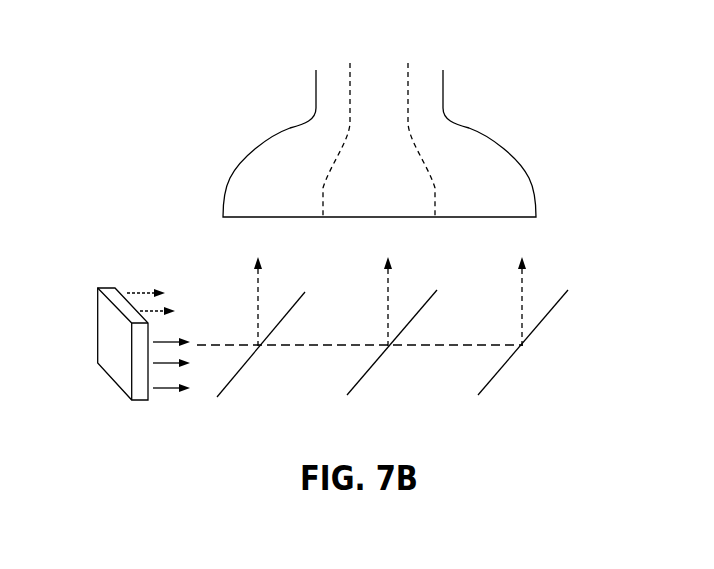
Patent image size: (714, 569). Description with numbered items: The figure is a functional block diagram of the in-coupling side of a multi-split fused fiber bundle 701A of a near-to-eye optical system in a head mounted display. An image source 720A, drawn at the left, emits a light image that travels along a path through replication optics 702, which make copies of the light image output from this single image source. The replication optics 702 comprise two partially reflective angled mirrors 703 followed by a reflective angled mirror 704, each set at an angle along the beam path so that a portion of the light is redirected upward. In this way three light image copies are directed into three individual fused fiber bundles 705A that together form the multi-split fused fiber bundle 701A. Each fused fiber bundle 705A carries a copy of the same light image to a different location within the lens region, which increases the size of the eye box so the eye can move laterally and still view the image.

The multi-split fused fiber bundle 701A is at (534, 80).
The replication optics 702 is at (578, 246).
The partially reflective angled mirror 703 is at (227, 383).
The reflective angled mirror 704 is at (493, 377).
The fused fiber bundle 705A is at (380, 140).
The image source 720A is at (112, 343).